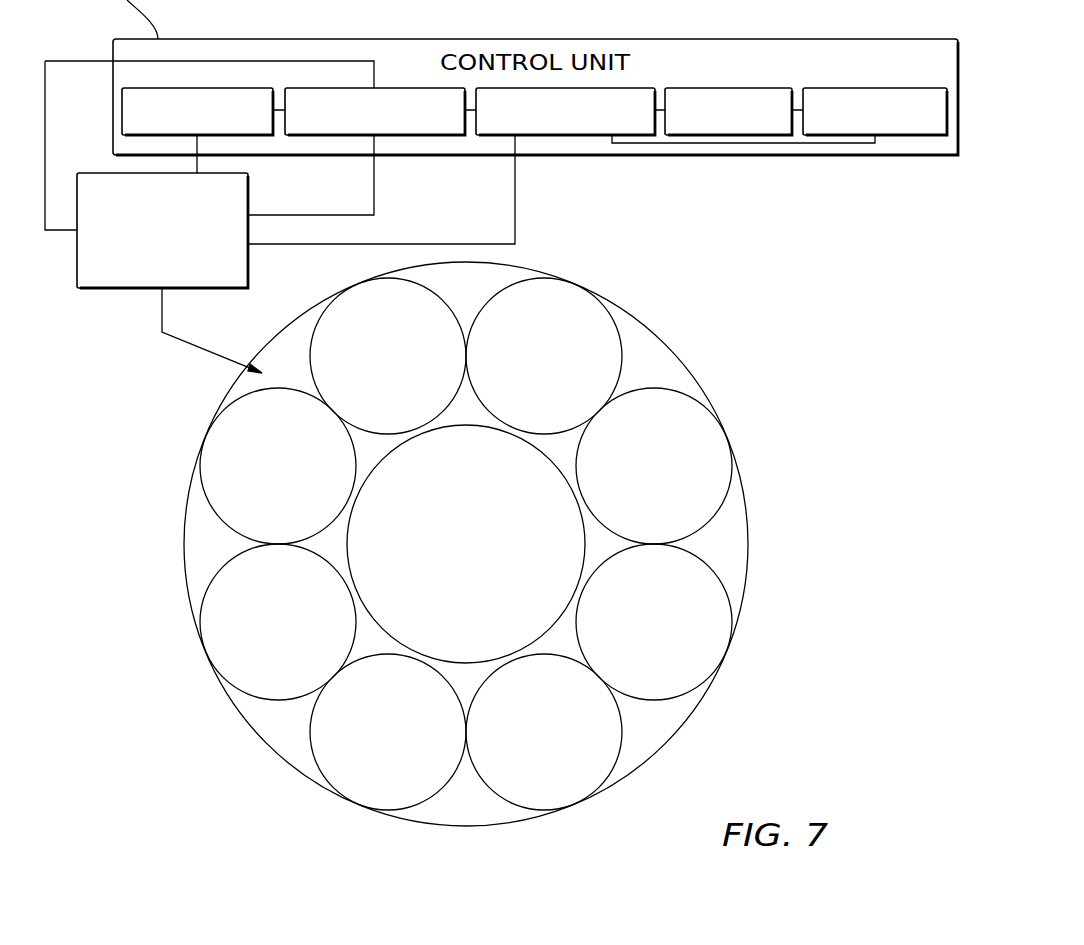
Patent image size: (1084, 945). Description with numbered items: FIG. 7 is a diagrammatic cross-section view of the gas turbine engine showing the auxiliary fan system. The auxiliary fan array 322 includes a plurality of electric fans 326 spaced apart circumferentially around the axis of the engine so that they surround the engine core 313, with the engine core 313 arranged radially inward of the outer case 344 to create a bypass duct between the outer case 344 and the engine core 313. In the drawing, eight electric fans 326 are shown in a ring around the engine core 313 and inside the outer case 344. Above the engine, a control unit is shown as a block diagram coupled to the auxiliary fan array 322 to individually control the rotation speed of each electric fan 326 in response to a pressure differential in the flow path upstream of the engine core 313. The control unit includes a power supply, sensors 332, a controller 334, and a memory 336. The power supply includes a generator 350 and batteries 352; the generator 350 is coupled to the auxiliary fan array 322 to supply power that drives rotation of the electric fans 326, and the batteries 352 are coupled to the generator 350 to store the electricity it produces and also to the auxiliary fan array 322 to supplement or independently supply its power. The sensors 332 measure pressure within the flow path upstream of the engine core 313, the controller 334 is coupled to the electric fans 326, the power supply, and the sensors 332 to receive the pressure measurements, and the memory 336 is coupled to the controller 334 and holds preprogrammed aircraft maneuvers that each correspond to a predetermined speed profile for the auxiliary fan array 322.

The batteries 352 is at (197, 88).
The generator 350 is at (415, 88).
The controller 334 is at (635, 88).
The memory 336 is at (725, 88).
The sensors 332 is at (858, 88).
The auxiliary fan array 322 is at (115, 290).
The electric fans 326 is at (367, 337).
The engine core 313 is at (337, 545).
The outer case 344 is at (187, 580).